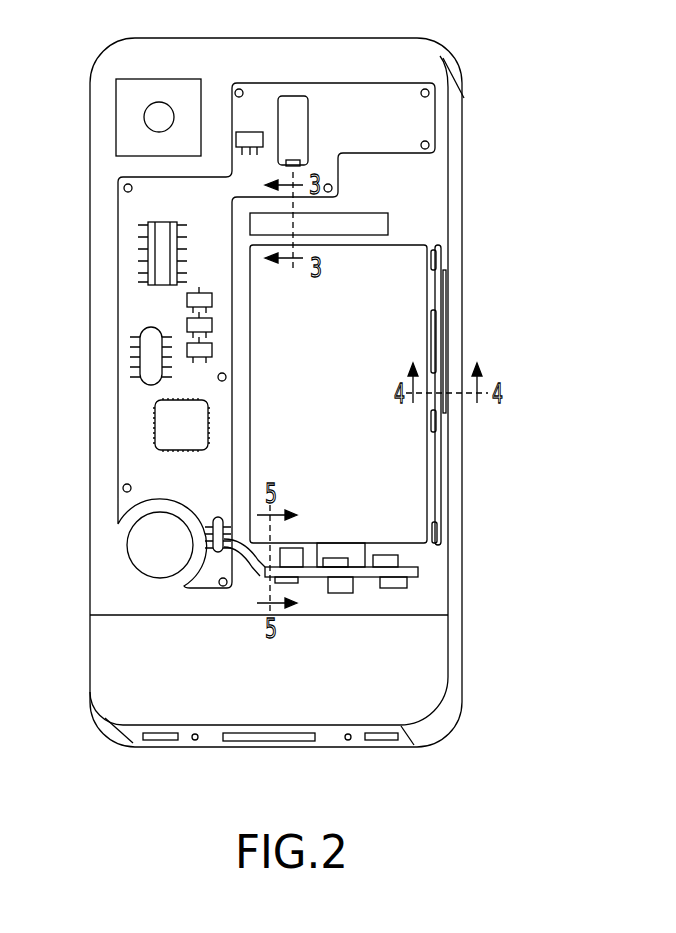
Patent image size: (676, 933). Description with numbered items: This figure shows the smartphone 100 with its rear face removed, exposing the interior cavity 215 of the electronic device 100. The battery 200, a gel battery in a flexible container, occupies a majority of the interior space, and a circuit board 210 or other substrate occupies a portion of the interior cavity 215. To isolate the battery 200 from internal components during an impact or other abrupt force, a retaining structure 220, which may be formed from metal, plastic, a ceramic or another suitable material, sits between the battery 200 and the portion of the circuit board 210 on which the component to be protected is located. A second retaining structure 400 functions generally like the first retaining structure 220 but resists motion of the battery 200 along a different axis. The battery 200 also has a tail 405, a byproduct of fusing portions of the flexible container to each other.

The electronic device 100 is at (517, 93).
The battery 200 is at (402, 282).
The printed circuit board 210 is at (119, 238).
The upper board region 215 is at (425, 184).
The connector board 220 is at (388, 222).
The antenna strip 400 is at (441, 248).
The antenna element 405 is at (446, 290).